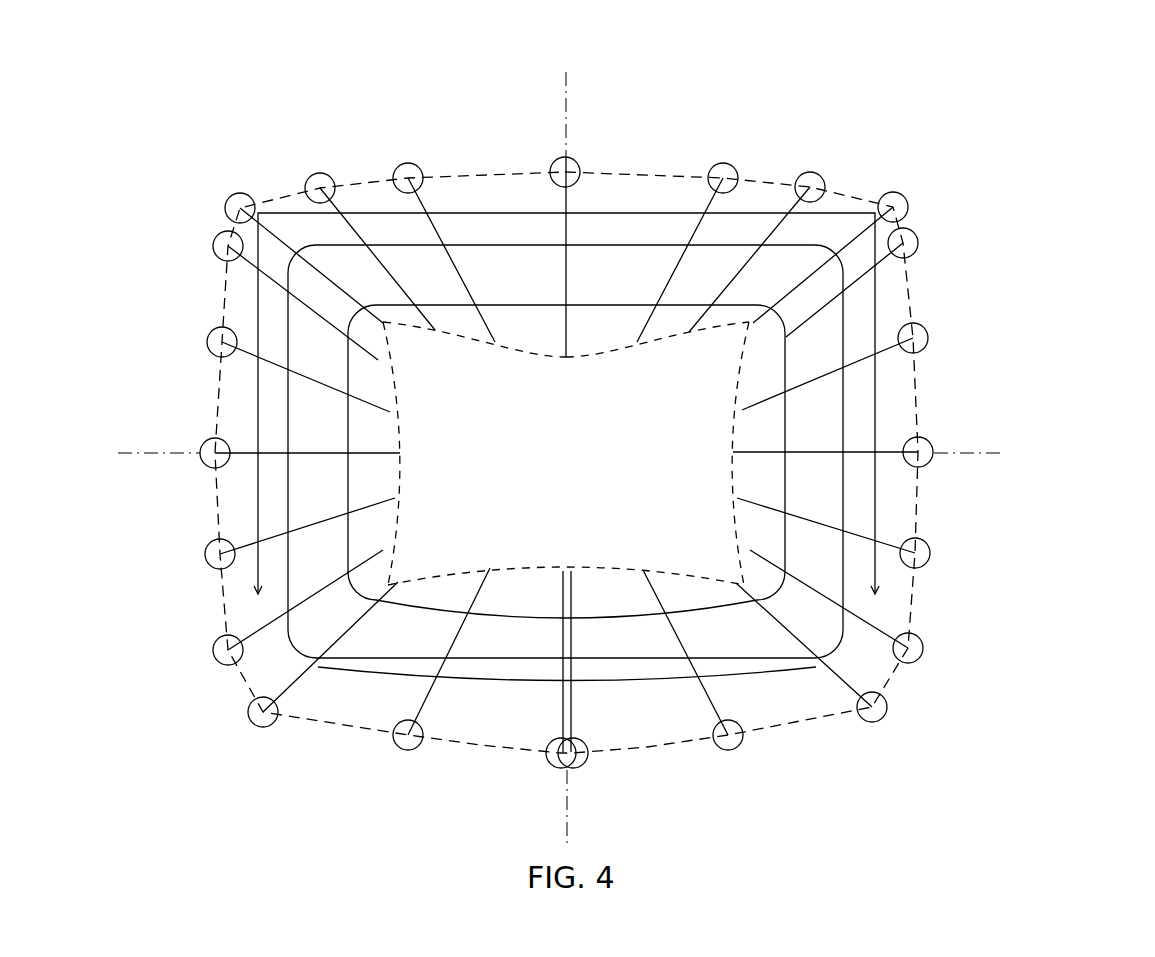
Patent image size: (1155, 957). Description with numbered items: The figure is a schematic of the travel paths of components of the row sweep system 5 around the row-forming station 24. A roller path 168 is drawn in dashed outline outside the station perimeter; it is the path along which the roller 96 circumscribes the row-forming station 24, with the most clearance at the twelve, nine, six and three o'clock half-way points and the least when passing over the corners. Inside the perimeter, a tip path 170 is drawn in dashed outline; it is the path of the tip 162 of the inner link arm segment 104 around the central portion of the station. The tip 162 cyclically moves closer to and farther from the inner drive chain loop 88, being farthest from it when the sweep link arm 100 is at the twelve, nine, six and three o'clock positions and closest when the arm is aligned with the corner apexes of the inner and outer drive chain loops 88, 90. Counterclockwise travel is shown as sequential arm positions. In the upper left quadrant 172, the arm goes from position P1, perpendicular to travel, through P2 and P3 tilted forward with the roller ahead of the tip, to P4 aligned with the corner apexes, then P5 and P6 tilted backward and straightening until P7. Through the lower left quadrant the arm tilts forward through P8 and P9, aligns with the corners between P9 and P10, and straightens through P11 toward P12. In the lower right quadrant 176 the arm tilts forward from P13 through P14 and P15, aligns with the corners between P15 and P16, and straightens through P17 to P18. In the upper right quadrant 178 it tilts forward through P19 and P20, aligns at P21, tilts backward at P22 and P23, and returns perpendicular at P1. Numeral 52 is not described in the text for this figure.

The row sweep system 5 is at (836, 78).
The row-forming station 24 is at (658, 761).
The liner 52 is at (653, 78).
The inner drive chain loop 88 is at (595, 301).
The outer drive chain loop 90 is at (610, 240).
The roller 96 is at (585, 150).
The sweep link arm 100 is at (550, 255).
The inner link arm segment 104 is at (507, 360).
The tip 162 is at (566, 357).
The roller path 168 is at (630, 157).
The tip path 170 is at (582, 364).
The upper left quadrant 172 is at (174, 121).
The lower right quadrant 176 is at (1010, 818).
The upper right quadrant 178 is at (1027, 99).
The position P1 is at (558, 158).
The position P2 is at (400, 165).
The position P3 is at (318, 173).
The position P4 is at (231, 199).
The position P5 is at (217, 240).
The position P6 is at (209, 334).
The position P7 is at (202, 446).
The position P8 is at (209, 548).
The position P9 is at (215, 648).
The position P10 is at (255, 724).
The position P11 is at (398, 748).
The position P12 is at (556, 768).
The position P13 is at (575, 768).
The position P14 is at (733, 749).
The position P15 is at (883, 720).
The position P16 is at (920, 657).
The position P17 is at (927, 565).
The position P18 is at (930, 443).
The position P19 is at (927, 330).
The position P20 is at (912, 231).
The position P21 is at (904, 193).
The position P22 is at (818, 174).
The position P23 is at (735, 165).